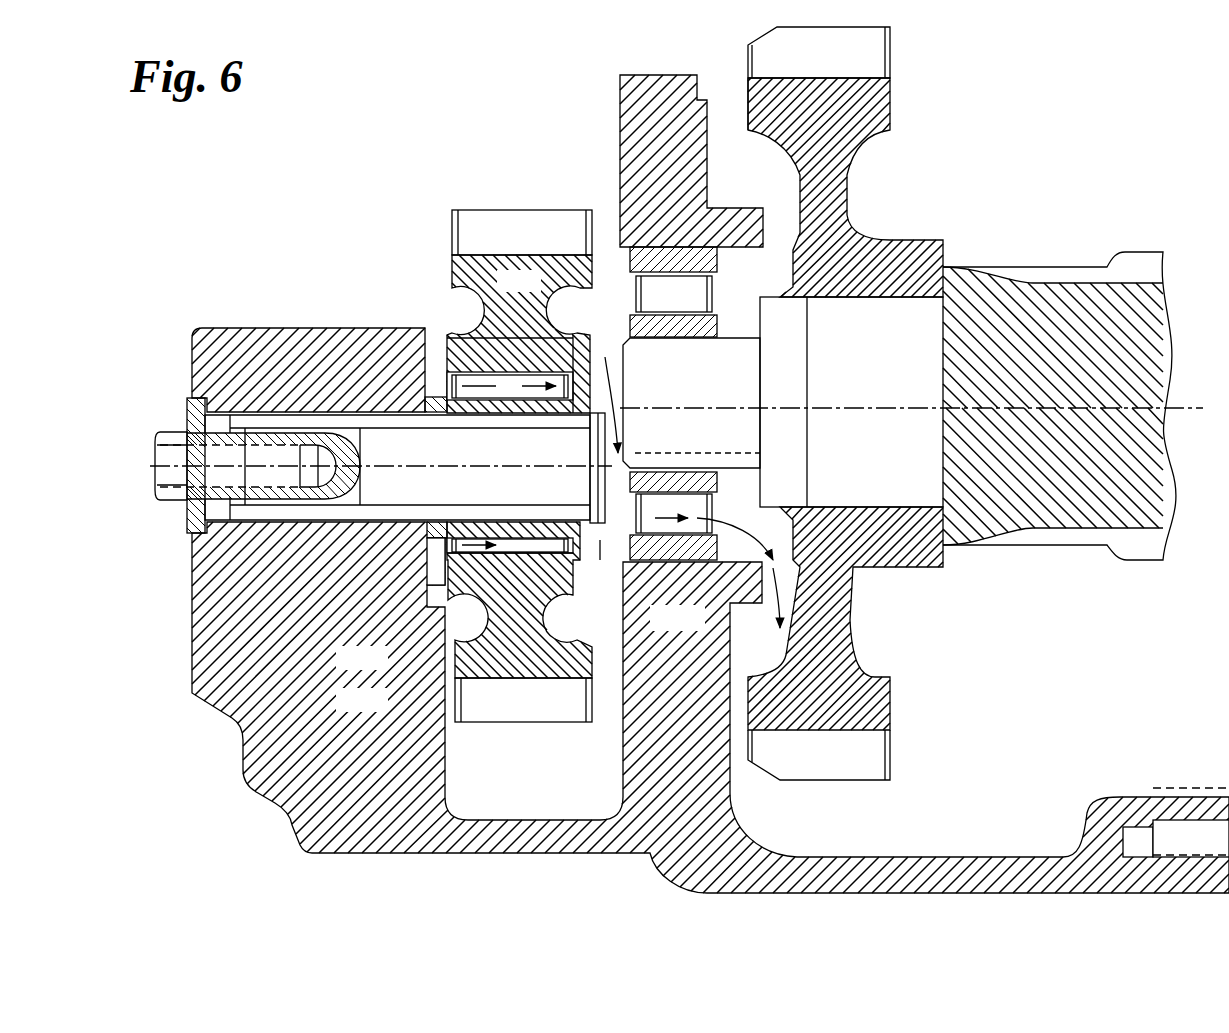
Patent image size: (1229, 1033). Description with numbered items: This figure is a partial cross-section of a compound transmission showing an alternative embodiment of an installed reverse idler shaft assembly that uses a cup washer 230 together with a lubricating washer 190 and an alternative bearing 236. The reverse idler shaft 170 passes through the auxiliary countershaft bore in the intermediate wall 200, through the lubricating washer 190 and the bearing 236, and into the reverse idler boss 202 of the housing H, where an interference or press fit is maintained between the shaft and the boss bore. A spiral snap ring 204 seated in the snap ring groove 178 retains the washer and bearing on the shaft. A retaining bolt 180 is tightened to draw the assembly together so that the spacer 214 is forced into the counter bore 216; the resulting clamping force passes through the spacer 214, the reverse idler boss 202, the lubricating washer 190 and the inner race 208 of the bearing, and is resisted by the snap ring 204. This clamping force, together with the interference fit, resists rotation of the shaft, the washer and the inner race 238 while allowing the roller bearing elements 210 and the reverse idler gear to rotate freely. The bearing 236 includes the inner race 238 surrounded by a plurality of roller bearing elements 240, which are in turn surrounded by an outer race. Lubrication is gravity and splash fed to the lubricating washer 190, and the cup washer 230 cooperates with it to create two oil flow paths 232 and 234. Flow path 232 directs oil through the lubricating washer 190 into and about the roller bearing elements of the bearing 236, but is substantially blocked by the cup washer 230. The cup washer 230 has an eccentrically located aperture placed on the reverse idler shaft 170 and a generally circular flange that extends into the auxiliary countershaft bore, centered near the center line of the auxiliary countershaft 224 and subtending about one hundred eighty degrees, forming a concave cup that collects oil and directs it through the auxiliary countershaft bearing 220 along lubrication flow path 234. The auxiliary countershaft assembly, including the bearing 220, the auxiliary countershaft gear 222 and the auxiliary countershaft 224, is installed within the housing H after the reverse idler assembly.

The housing H is at (316, 855).
The reverse idler boss 202 is at (242, 326).
The inner race 208 is at (427, 608).
The roller bearing elements 210 is at (440, 600).
The snap ring 204 is at (184, 525).
The snap ring groove 178 is at (593, 415).
The reverse idler shaft 170 is at (160, 431).
The retaining bolt 180 is at (158, 487).
The counter bore 216 is at (200, 405).
The lubricating washer 190 is at (437, 364).
The oil flow path 232 is at (438, 345).
The cup washer 230 is at (578, 333).
The spacer 214 is at (548, 726).
The bearing 236 is at (472, 545).
The roller bearing elements 240 is at (560, 545).
The inner race 238 is at (597, 552).
The intermediate wall 200 is at (618, 95).
The auxiliary countershaft bearing 220 is at (673, 243).
The lubrication flow path 234 is at (608, 333).
The auxiliary countershaft gear 222 is at (892, 686).
The auxiliary countershaft 224 is at (1020, 548).